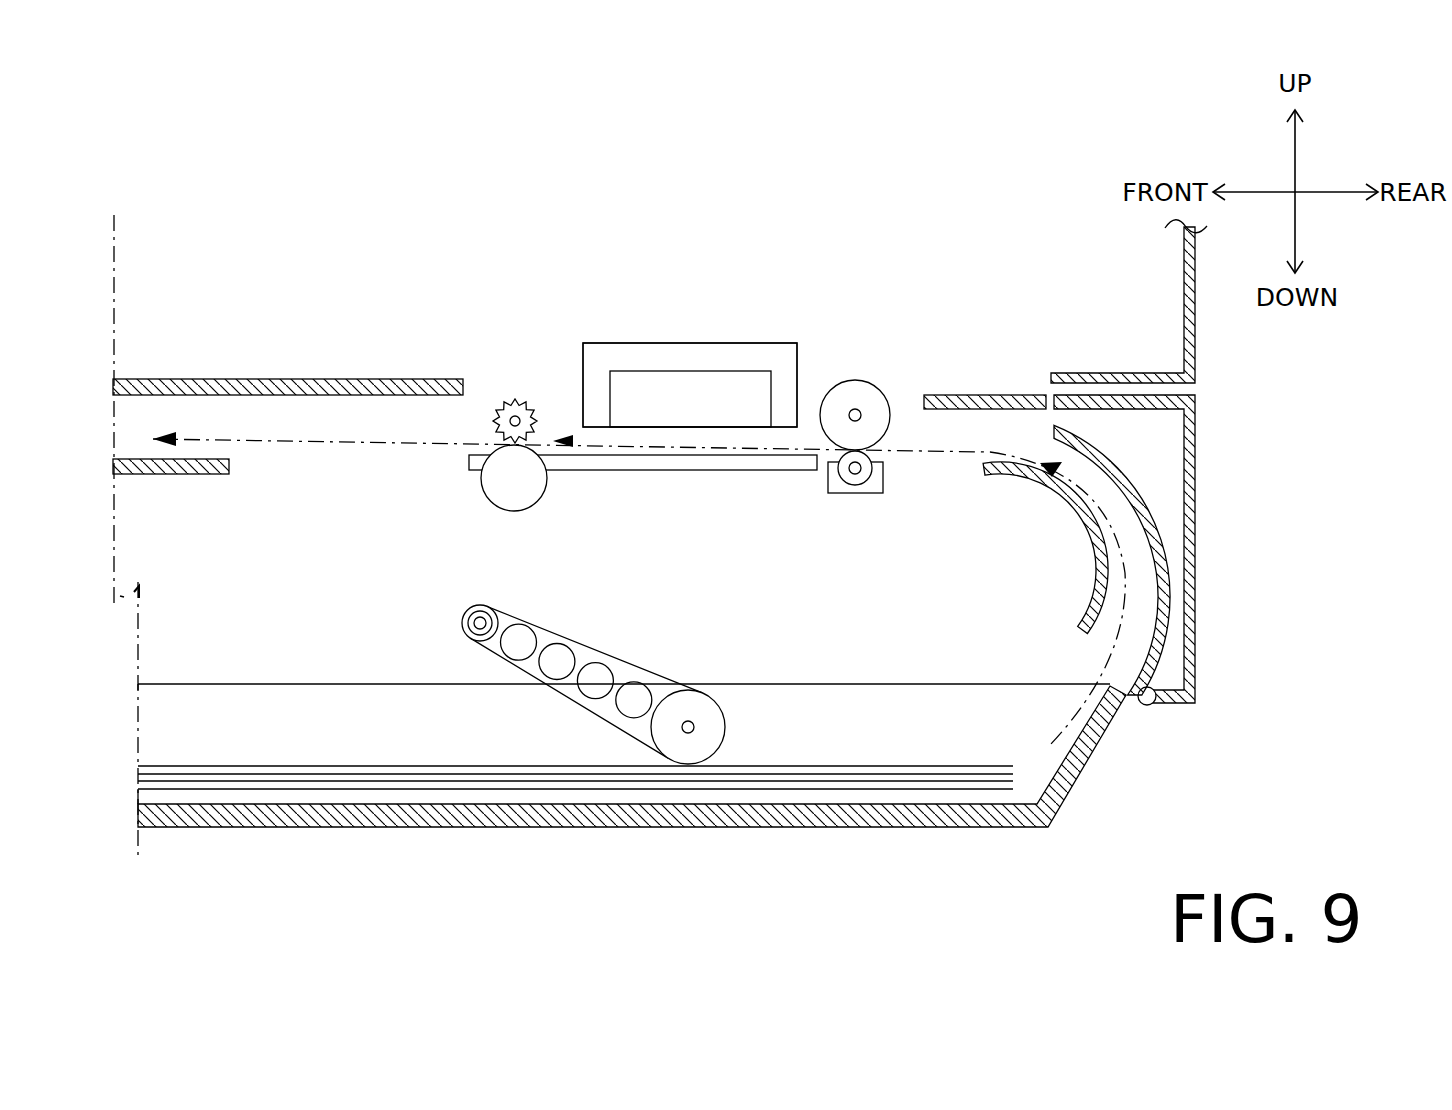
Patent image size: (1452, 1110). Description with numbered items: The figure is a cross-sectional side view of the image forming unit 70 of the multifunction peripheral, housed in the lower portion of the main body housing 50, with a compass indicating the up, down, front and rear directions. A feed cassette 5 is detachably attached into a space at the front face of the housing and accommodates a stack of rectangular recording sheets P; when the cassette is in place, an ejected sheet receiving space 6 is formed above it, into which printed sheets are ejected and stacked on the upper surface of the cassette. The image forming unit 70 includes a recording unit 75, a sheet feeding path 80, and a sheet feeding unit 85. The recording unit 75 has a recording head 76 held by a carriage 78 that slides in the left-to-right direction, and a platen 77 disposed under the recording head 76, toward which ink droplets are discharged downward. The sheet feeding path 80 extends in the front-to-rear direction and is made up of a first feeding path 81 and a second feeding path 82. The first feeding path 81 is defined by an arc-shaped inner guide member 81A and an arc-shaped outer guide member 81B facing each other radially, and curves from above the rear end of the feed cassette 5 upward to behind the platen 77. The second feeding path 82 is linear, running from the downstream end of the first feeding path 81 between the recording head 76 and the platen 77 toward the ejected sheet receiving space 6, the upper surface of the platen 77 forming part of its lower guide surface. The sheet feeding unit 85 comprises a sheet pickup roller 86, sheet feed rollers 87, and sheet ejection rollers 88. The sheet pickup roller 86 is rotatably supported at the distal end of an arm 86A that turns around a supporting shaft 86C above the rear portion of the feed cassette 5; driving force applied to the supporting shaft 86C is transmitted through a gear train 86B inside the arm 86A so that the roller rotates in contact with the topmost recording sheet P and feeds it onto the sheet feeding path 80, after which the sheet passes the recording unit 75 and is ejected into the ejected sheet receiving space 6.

The feed cassette 5 is at (1078, 785).
The ejected sheet receiving space 6 is at (141, 412).
The main body housing 50 is at (1197, 353).
The image forming unit 70 is at (310, 422).
The recording unit 75 is at (718, 328).
The recording head 76 is at (668, 371).
The platen 77 is at (643, 471).
The carriage 78 is at (618, 343).
The sheet feeding path 80 is at (998, 433).
The first feeding path 81 is at (1131, 550).
The inner guide member 81A is at (1093, 597).
The outer guide member 81B is at (1148, 498).
The second feeding path 82 is at (736, 440).
The sheet feeding unit 85 is at (898, 374).
The sheet pickup roller 86 is at (588, 755).
The arm 86A is at (637, 712).
The gear train 86B is at (596, 655).
The supporting shaft 86C is at (475, 641).
The sheet feed rollers 87 is at (852, 378).
The sheet ejection rollers 88 is at (499, 388).
The recording sheet P is at (972, 767).